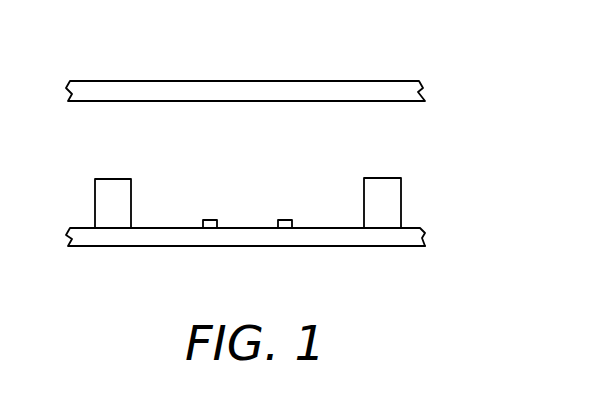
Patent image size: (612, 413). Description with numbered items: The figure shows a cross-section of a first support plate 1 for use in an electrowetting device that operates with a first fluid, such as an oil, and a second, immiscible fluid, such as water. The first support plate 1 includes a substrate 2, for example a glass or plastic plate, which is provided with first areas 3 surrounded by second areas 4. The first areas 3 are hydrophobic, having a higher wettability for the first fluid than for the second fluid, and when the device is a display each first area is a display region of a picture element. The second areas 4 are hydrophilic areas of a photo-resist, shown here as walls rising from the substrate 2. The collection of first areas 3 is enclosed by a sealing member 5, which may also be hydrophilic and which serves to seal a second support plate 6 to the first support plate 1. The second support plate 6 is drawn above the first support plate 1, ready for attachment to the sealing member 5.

The first support plate 1 is at (425, 233).
The substrate 2 is at (397, 247).
The first areas 3 is at (238, 229).
The second areas 4 is at (205, 229).
The sealing member 5 is at (401, 178).
The second support plate 6 is at (422, 90).